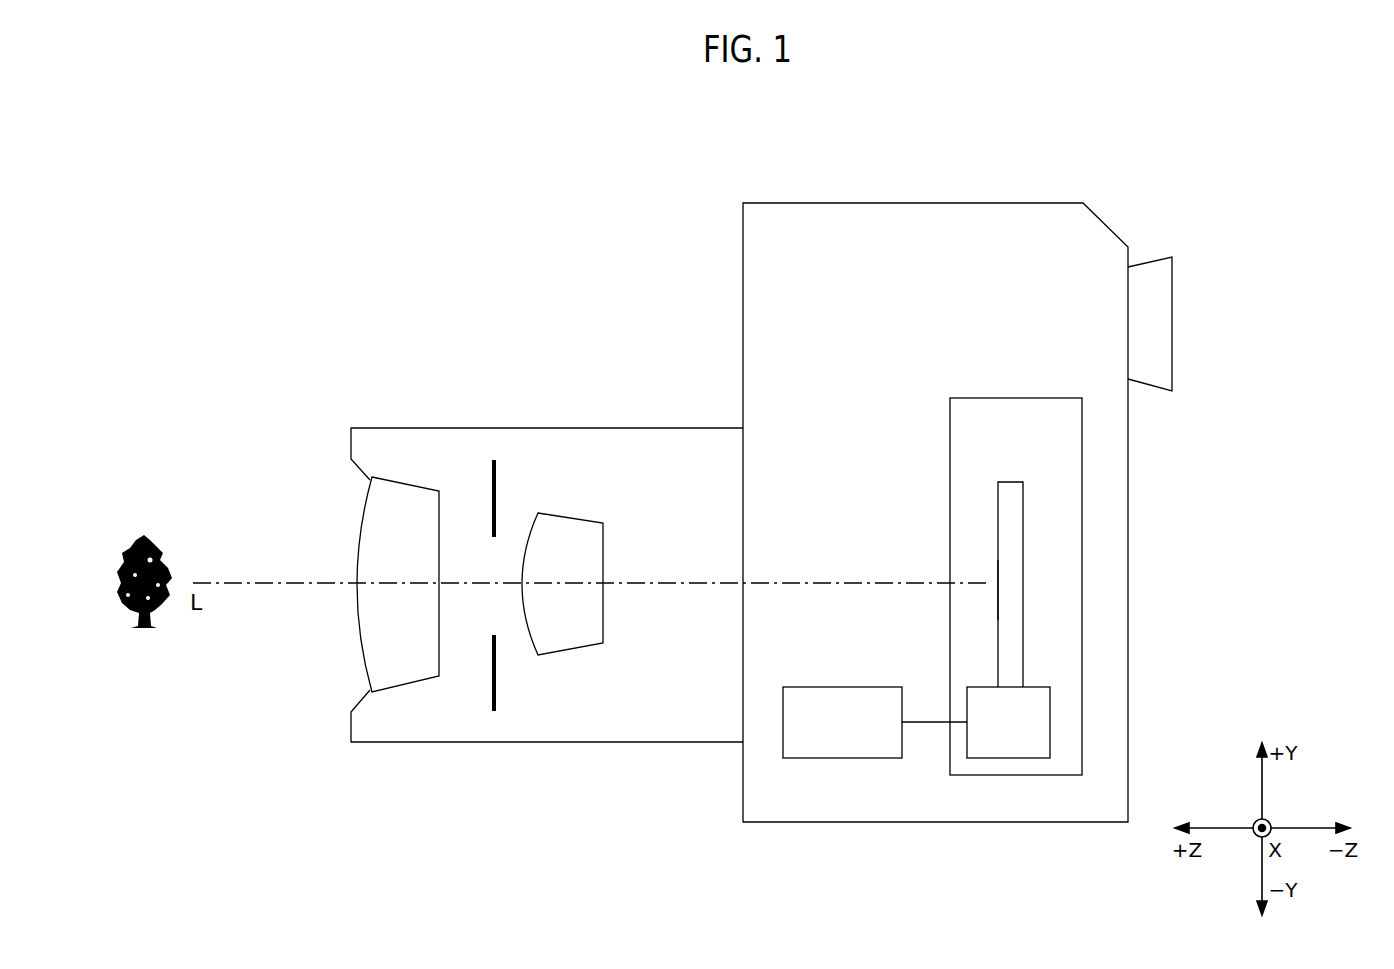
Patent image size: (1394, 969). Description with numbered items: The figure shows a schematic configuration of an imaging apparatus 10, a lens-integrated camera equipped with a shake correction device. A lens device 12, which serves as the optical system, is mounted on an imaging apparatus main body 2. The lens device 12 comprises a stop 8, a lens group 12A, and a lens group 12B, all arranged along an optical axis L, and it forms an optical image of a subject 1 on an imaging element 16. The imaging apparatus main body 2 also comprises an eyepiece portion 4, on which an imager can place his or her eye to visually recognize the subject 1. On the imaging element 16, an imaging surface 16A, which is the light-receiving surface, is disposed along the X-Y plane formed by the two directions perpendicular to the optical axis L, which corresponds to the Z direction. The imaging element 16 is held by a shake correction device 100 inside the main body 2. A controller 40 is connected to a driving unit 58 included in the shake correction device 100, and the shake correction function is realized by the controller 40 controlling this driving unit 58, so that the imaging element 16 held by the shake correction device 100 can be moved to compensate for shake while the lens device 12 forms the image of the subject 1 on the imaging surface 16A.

The subject 1 is at (141, 535).
The imaging apparatus main body 2 is at (931, 201).
The eyepiece portion 4 is at (1154, 257).
The stop 8 is at (489, 471).
The imaging apparatus 10 is at (768, 146).
The lens device 12 is at (521, 428).
The lens group 12A is at (408, 480).
The lens group 12B is at (570, 513).
The imaging element 16 is at (1010, 482).
The imaging surface 16A is at (1000, 638).
The controller 40 is at (840, 758).
The driving unit 58 is at (1010, 758).
The shake correction device 100 is at (1013, 398).